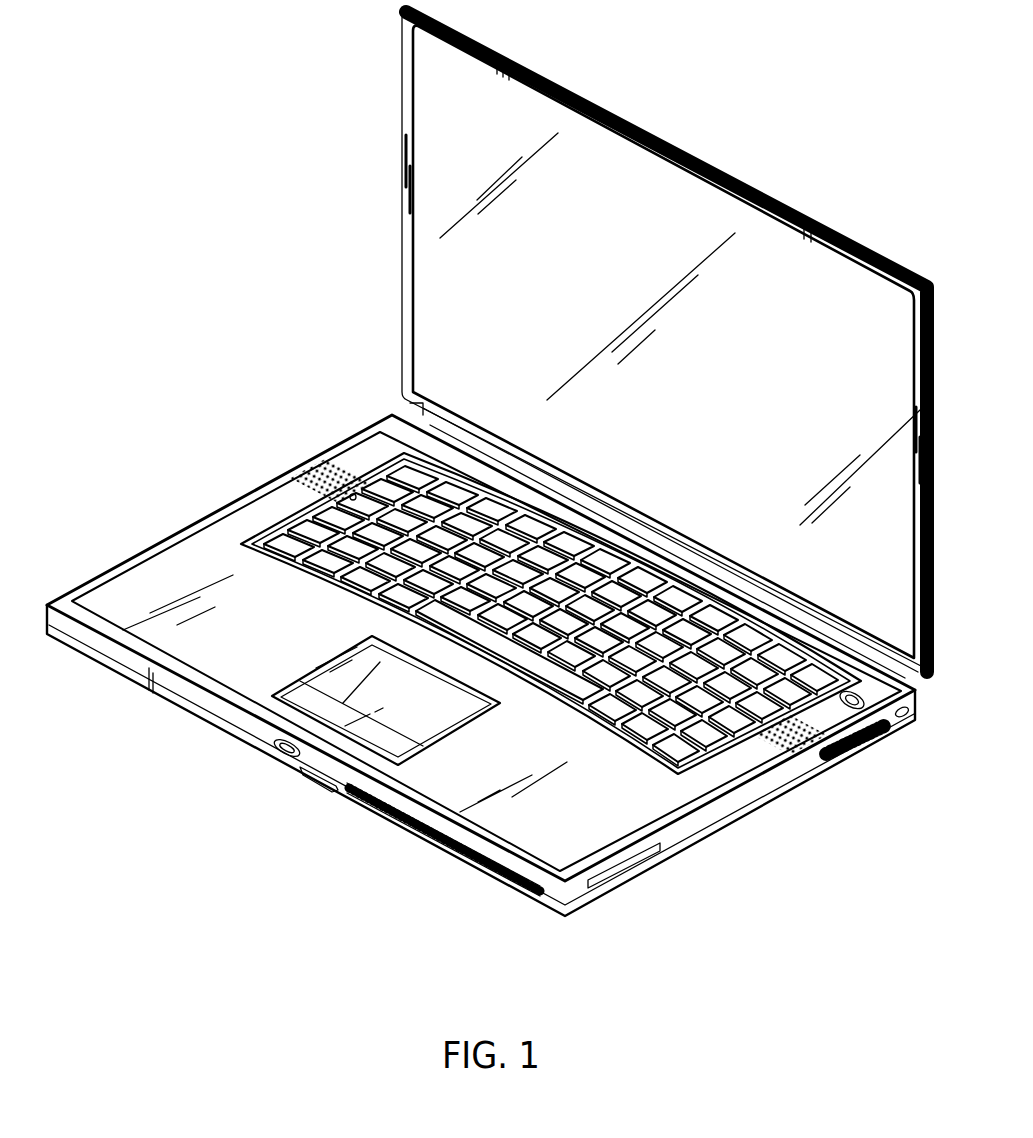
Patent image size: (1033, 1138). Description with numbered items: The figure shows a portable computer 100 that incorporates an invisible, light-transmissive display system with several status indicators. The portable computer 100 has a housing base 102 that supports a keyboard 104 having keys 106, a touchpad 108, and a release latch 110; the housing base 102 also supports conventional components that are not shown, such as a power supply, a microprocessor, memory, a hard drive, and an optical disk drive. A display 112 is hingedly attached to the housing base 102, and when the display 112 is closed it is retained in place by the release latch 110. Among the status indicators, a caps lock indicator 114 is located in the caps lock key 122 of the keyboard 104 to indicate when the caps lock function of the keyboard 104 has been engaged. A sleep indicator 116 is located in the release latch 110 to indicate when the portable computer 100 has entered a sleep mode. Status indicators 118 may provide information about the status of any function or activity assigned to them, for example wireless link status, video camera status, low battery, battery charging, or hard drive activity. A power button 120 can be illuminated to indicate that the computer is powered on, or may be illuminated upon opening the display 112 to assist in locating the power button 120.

The portable computer 100 is at (272, 147).
The housing base 102 is at (156, 539).
The keyboard 104 is at (402, 455).
The keys 106 is at (316, 553).
The touchpad 108 is at (149, 686).
The release latch 110 is at (317, 766).
The display 112 is at (398, 311).
The caps lock indicator 114 is at (328, 466).
The sleep indicator 116 is at (281, 754).
The status indicators 118 is at (656, 129).
The power button 120 is at (880, 713).
The caps lock key 122 is at (345, 488).